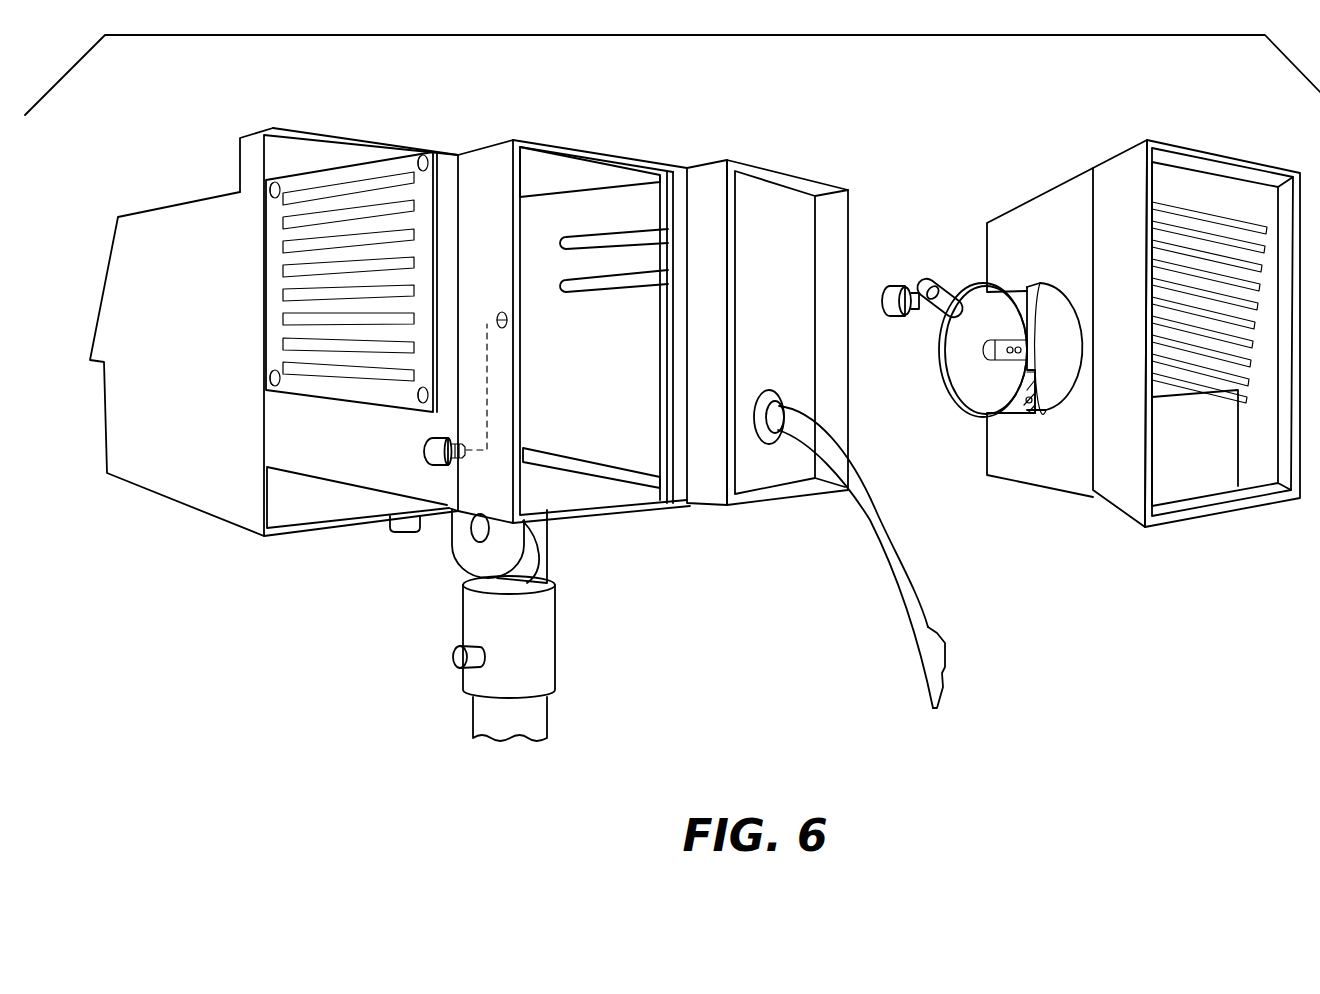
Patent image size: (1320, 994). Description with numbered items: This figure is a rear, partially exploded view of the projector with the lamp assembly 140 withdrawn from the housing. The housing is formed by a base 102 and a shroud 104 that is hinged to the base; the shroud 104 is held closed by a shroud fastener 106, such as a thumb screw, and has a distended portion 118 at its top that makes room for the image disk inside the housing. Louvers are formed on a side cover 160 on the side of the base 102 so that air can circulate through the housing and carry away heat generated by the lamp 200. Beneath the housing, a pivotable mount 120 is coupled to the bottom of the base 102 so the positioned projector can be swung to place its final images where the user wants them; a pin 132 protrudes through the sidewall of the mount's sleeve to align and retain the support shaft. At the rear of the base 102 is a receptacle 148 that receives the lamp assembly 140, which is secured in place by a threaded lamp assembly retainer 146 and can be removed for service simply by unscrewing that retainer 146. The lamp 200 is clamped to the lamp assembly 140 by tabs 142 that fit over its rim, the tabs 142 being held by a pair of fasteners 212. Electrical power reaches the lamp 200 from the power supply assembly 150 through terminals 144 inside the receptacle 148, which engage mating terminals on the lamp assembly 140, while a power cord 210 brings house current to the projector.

The base 102 is at (391, 467).
The shroud 104 is at (165, 337).
The shroud fastener 106 is at (413, 530).
The distended portion 118 is at (252, 148).
The mount 120 is at (437, 597).
The pin 132 is at (456, 660).
The lamp assembly 140 is at (1127, 505).
The tabs 142 is at (928, 283).
The terminals 144 is at (618, 242).
The lamp assembly retainer 146 is at (421, 462).
The receptacle 148 is at (600, 162).
The power supply assembly 150 is at (807, 180).
The side cover 160 is at (400, 163).
The lamp 200 is at (980, 392).
The power cord 210 is at (896, 580).
The fasteners 212 is at (892, 293).